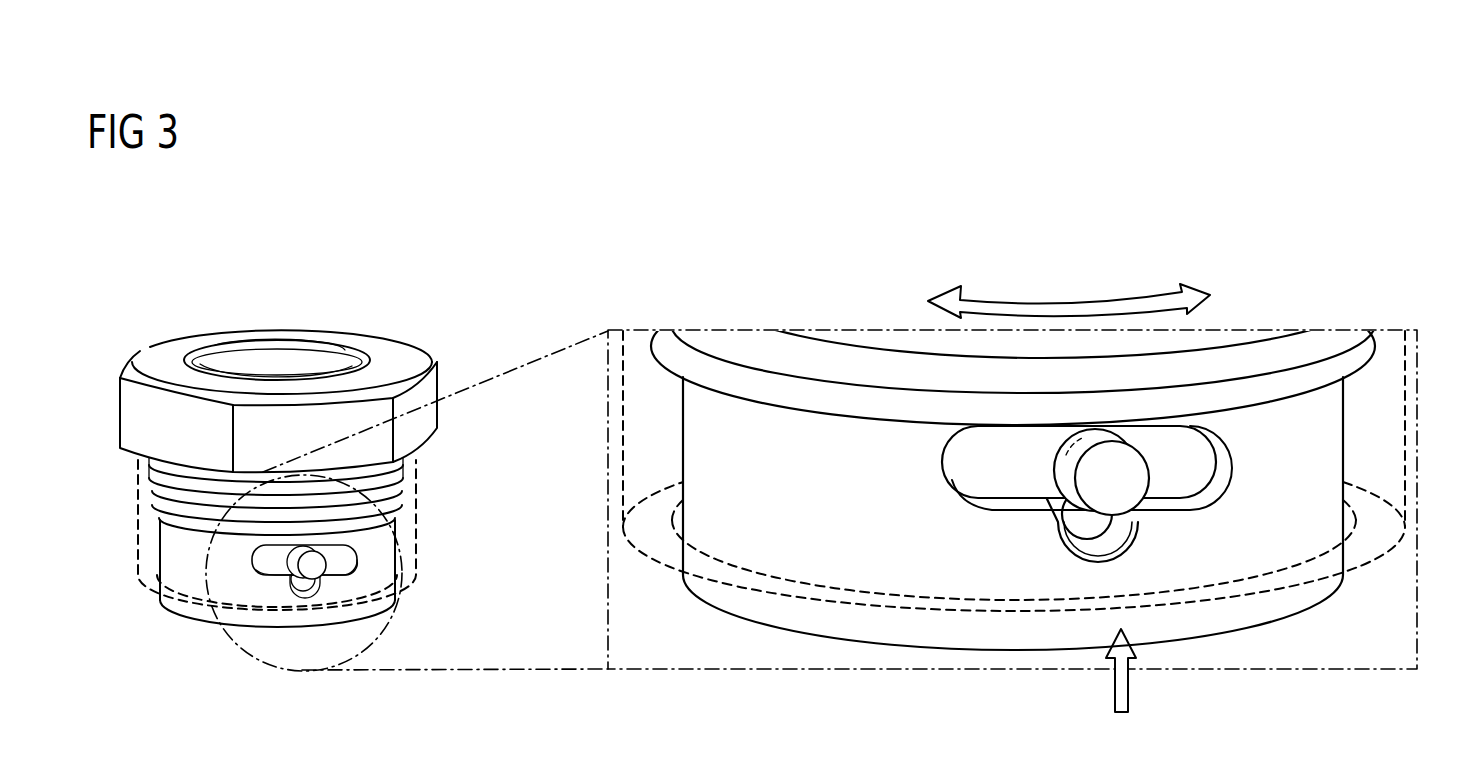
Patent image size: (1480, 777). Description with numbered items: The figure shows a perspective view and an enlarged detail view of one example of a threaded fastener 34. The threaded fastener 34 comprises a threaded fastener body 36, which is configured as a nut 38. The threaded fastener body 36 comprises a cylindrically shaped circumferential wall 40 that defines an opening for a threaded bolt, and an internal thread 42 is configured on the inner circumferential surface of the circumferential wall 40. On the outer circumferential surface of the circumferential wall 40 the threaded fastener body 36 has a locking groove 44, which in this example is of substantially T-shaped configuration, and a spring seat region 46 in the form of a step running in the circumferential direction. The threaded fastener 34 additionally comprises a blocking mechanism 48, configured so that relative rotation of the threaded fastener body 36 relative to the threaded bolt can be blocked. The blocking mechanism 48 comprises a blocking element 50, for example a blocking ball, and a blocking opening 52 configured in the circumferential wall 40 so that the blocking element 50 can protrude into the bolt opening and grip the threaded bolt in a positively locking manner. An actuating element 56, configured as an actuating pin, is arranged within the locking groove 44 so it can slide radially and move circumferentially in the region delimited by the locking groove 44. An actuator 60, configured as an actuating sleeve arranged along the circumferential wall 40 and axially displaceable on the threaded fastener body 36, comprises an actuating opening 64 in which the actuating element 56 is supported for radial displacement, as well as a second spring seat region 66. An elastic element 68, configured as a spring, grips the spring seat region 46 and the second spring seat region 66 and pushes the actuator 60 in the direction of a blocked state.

The threaded fastener 34 is at (322, 252).
The threaded fastener body 36 is at (705, 622).
The nut 38 is at (398, 355).
The circumferential wall 40 is at (387, 607).
The internal thread 42 is at (245, 352).
The locking groove 44 is at (268, 565).
The spring seat region 46 is at (405, 477).
The blocking mechanism 48 is at (192, 668).
The blocking element 50 is at (300, 593).
The blocking opening 52 is at (1107, 523).
The actuating element 56 is at (317, 570).
The actuator 60 is at (408, 547).
The actuating opening 64 is at (353, 563).
The second spring seat region 66 is at (406, 519).
The elastic element 68 is at (150, 507).